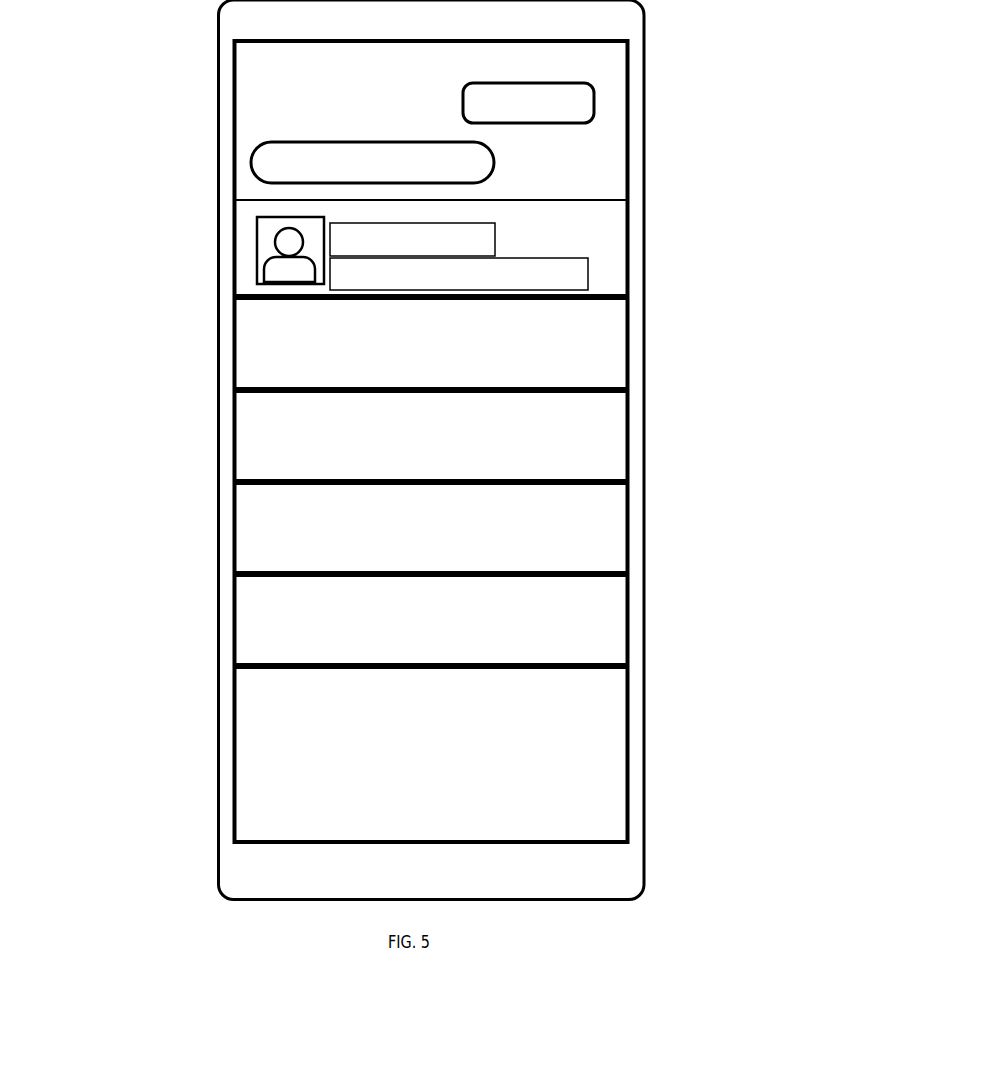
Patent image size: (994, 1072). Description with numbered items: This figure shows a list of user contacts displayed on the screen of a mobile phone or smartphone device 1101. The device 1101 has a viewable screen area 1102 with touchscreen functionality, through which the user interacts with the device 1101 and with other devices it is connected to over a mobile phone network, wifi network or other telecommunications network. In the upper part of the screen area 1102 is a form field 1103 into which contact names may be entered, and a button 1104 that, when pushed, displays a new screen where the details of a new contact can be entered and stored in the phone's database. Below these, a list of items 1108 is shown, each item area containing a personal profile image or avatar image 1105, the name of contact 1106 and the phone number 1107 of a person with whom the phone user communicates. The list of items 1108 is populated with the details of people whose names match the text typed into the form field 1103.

The mobile phone or smartphone device 1101 is at (200, 882).
The viewable screen area 1102 is at (220, 752).
The form field 1103 is at (260, 160).
The button 1104 is at (574, 103).
The personal profile image or avatar image 1105 is at (245, 249).
The name of contact 1106 is at (515, 241).
The phone number 1107 is at (606, 272).
The list of items 1108 is at (612, 214).